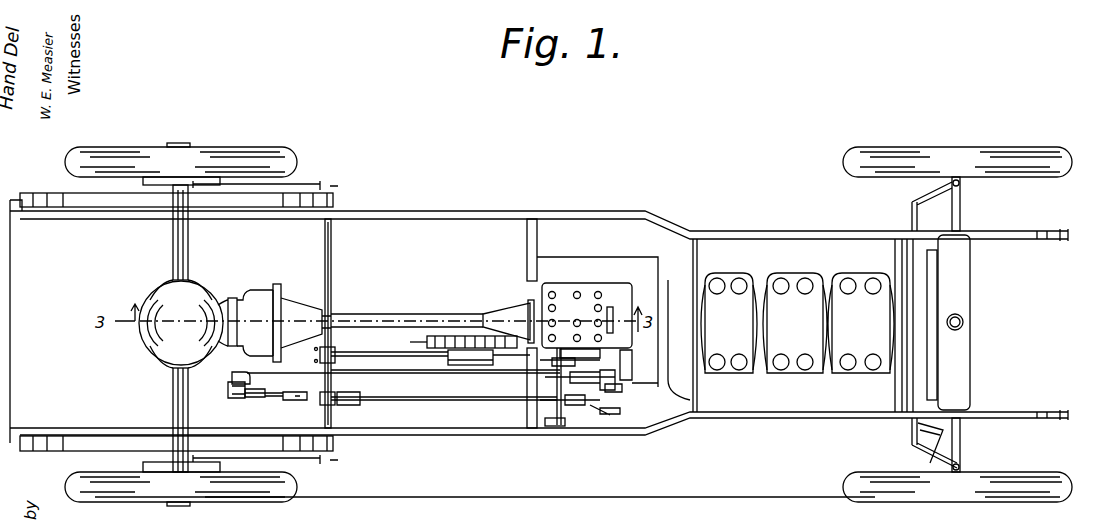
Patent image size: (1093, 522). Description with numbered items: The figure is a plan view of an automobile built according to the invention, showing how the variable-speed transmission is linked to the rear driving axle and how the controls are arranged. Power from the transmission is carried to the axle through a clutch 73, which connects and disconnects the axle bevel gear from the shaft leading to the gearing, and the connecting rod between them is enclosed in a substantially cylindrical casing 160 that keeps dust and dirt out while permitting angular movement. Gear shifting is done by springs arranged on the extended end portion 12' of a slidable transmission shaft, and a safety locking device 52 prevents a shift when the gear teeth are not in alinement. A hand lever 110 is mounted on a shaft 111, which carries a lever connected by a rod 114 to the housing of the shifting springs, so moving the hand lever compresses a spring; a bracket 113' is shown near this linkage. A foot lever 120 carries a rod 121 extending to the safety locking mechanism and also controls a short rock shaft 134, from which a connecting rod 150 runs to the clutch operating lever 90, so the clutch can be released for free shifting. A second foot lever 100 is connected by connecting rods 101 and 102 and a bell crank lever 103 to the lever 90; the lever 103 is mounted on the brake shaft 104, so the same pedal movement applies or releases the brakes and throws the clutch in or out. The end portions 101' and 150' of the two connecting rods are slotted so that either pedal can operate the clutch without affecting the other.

The clutch 73 is at (282, 300).
The brake shaft 104 is at (331, 265).
The cylindrical casing 160 is at (418, 313).
The extended end portion of the shaft 12' is at (587, 315).
The shifter bracket 113' is at (580, 337).
The safety locking device 52 is at (610, 352).
The connecting rod 150 is at (430, 371).
The rod 114 is at (512, 374).
The connecting rod 101 is at (444, 405).
The bell crank lever 103 is at (305, 398).
The slotted end portion of connecting rod 150' is at (281, 378).
The clutch operating lever 90 is at (236, 398).
The slotted end portion of connecting rod 101' is at (264, 399).
The rock shaft 134 is at (568, 420).
The shaft 111 is at (521, 408).
The rod 121 is at (612, 366).
The foot lever 120 is at (620, 377).
The connecting rod 102 is at (583, 405).
The foot lever 100 is at (612, 416).
The hand lever 110 is at (550, 428).